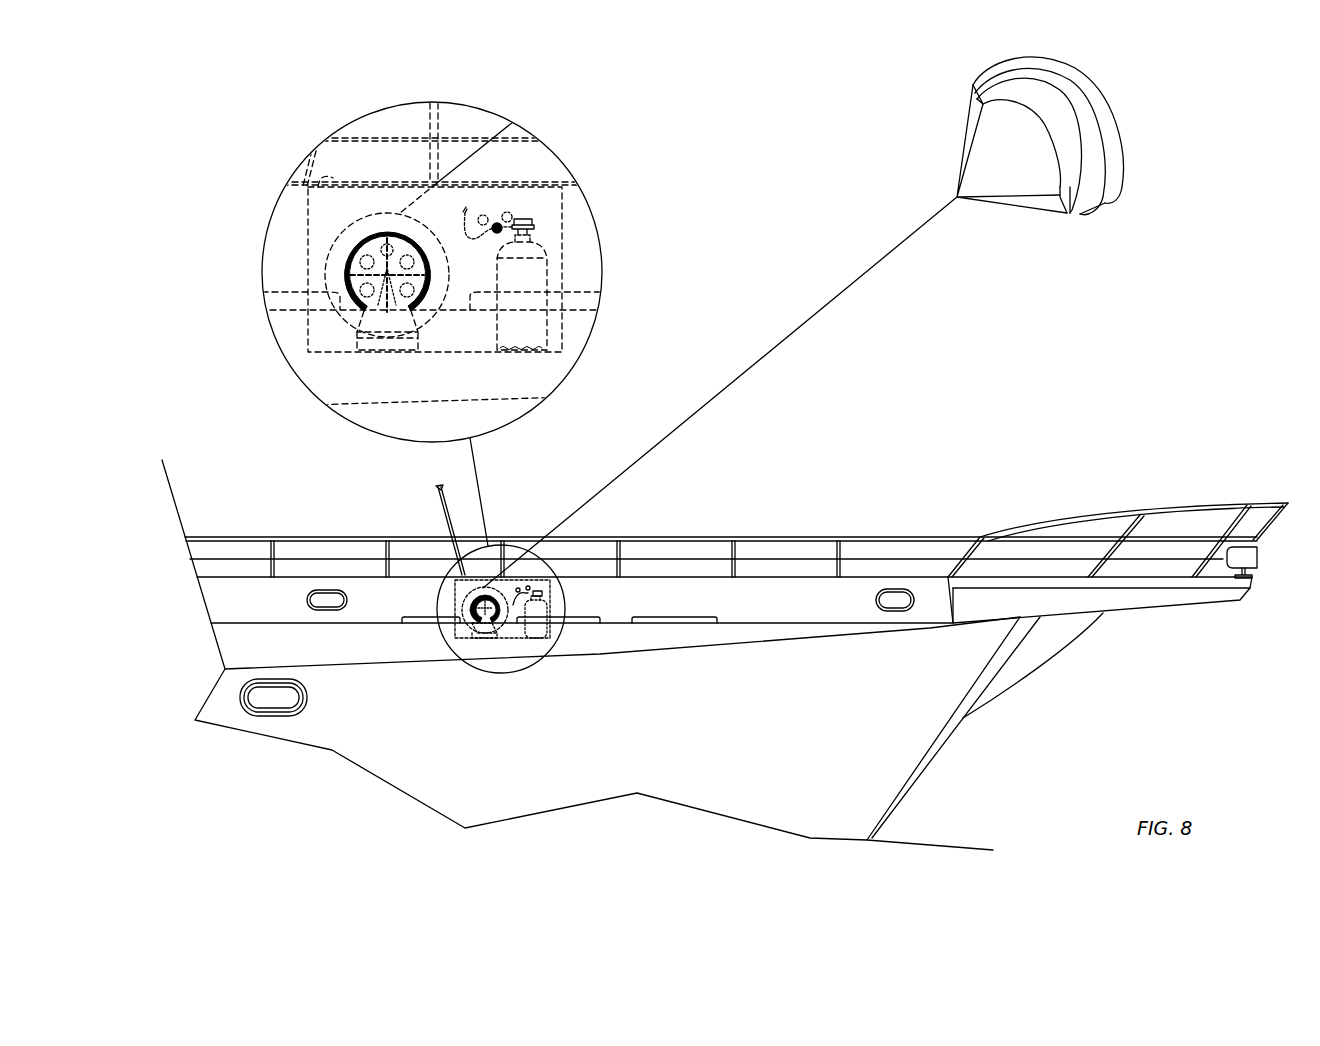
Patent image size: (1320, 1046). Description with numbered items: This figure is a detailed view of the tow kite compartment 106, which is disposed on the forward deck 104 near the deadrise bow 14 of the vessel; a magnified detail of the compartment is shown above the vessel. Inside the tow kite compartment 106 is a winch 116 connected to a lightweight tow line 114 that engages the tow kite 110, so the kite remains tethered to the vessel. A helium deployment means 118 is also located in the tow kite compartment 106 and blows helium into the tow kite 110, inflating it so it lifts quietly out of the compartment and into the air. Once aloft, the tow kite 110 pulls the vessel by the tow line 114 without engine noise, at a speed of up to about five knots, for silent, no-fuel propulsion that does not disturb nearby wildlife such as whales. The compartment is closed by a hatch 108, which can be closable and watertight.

The deadrise bow 14 is at (940, 747).
The forward deck 104 is at (790, 577).
The tow kite compartment 106 is at (533, 167).
The hatch 108 is at (438, 510).
The tow kite 110 is at (997, 68).
The lightweight tow line 114 is at (790, 338).
The winch 116 is at (343, 248).
The helium deployment means 118 is at (537, 272).